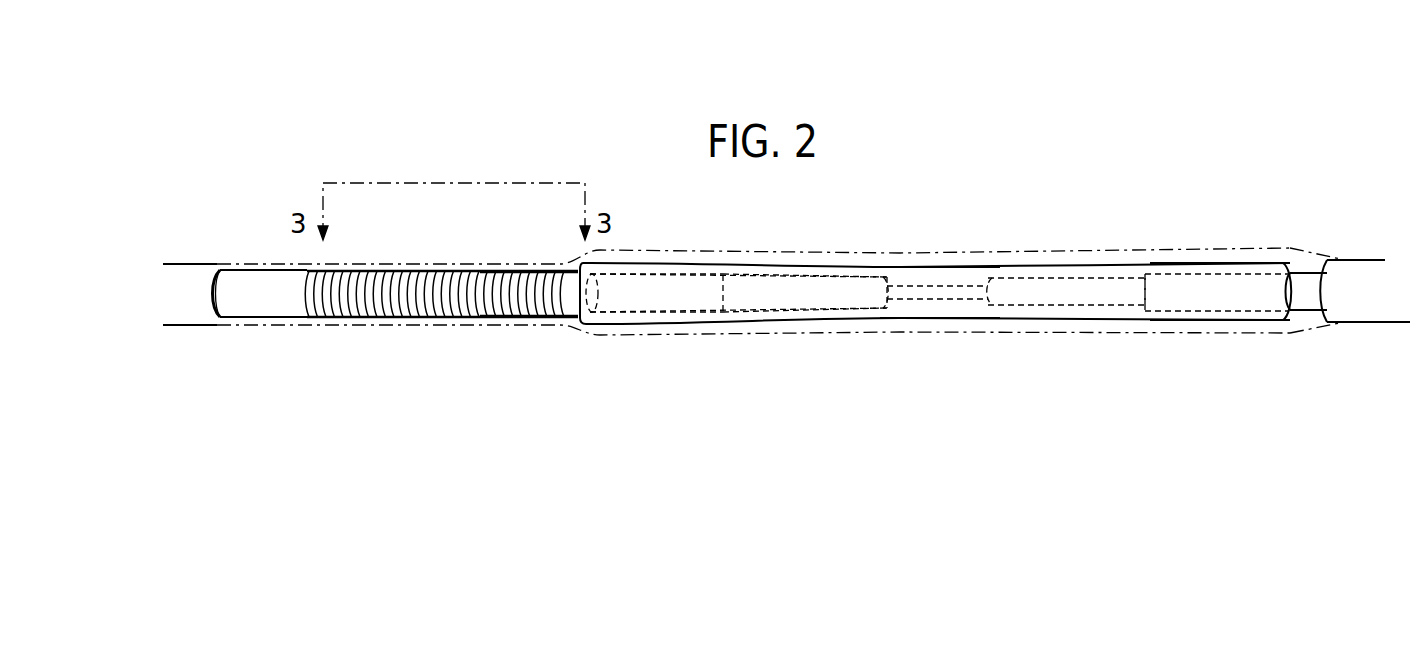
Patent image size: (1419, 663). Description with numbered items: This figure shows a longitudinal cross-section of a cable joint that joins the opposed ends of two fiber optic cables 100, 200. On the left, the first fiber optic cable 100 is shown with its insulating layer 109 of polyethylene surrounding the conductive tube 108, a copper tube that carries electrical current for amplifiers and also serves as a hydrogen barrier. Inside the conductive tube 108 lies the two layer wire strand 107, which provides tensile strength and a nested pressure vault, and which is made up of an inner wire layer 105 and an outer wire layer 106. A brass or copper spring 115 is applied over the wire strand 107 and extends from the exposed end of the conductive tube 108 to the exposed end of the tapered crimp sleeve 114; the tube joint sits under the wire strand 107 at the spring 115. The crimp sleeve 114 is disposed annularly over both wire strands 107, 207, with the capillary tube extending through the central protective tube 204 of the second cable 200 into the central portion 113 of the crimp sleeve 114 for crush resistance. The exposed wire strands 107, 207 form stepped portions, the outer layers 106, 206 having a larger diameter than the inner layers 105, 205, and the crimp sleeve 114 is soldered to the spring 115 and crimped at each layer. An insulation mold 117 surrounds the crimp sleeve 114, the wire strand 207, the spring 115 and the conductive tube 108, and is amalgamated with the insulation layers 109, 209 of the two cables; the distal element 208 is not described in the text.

The fiber optic cable 100 is at (228, 182).
The fiber optic cable 200 is at (1330, 242).
The inner wire layer 105 is at (770, 300).
The outer wire layer 106 is at (647, 303).
The wire strand 107 is at (482, 305).
The conductive tube 108 is at (262, 312).
The insulating layer 109 is at (193, 305).
The central portion 113 is at (958, 318).
The crimp sleeve 114 is at (1205, 322).
The spring 115 is at (390, 318).
The insulation mold 117 is at (575, 335).
The central protective tube 204 is at (915, 287).
The inner wire layer 205 is at (1038, 297).
The outer wire layer 206 is at (1168, 300).
The wire strand 207 is at (1178, 413).
The tip 208 is at (1305, 295).
The insulating layer 209 is at (1370, 300).